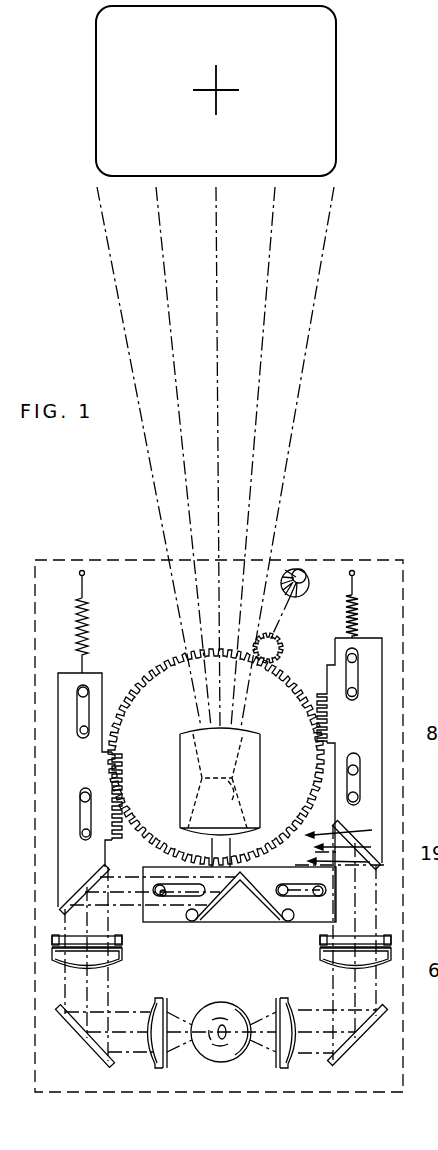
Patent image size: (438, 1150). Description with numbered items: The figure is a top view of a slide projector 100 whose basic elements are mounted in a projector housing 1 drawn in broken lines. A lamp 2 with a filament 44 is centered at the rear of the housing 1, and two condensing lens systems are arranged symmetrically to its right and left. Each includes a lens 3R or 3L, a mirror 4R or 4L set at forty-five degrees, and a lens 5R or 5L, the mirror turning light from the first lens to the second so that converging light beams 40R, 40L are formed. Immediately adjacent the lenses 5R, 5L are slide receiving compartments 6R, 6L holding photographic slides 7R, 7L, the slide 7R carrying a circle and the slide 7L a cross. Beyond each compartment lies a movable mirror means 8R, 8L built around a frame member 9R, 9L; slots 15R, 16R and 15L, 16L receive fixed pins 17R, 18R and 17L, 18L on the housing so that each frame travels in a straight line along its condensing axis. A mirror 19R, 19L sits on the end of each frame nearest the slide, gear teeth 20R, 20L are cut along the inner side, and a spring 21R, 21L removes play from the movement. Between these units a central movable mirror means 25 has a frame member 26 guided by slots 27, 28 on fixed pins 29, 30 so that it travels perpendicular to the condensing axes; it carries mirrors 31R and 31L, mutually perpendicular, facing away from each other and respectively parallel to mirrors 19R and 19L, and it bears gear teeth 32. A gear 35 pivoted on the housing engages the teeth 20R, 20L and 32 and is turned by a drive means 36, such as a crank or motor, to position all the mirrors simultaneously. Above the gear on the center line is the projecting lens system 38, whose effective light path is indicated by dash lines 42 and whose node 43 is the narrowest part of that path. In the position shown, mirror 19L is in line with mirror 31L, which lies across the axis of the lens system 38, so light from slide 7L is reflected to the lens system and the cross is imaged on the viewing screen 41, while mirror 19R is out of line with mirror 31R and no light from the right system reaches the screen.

The projector housing 1 is at (332, 560).
The slide projector 100 is at (123, 555).
The viewing screen 41 is at (107, 58).
The lamp 2 is at (235, 1015).
The filament 44 is at (215, 1036).
The lens 3L is at (150, 1062).
The lens 3R is at (291, 1063).
The mirror 4L is at (85, 1040).
The mirror 4R is at (358, 1040).
The lens 5L is at (112, 966).
The lens 5R is at (330, 966).
The slide receiving compartment 6L is at (52, 941).
The slide receiving compartment 6R is at (392, 940).
The photographic slide 7L is at (70, 937).
The photographic slide 7R is at (375, 940).
The movable mirror means 8L is at (53, 755).
The movable mirror means 8R is at (386, 727).
The frame member 9L is at (66, 673).
The frame member 9R is at (371, 637).
The slot 15L is at (85, 733).
The slot 15R is at (356, 657).
The slot 16L is at (86, 838).
The slot 16R is at (356, 772).
The fixed pin 17L is at (78, 693).
The fixed pin 17R is at (357, 692).
The fixed pin 18L is at (80, 800).
The fixed pin 18R is at (357, 797).
The mirror 19L is at (80, 890).
The mirror 19R is at (360, 845).
The gear teeth 20L is at (124, 818).
The gear teeth 20R is at (322, 690).
The spring 21L is at (91, 634).
The spring 21R is at (345, 607).
The movable mirror means 25 is at (222, 930).
The frame member 26 is at (245, 910).
The slot 27 is at (162, 886).
The slot 28 is at (317, 896).
The fixed pin 29 is at (163, 896).
The fixed pin 30 is at (285, 895).
The mirror 31L is at (189, 921).
The mirror 31R is at (286, 921).
The gear teeth 32 is at (326, 847).
The gear 35 is at (166, 660).
The drive means 36 is at (265, 629).
The projecting lens system 38 is at (247, 723).
The converging light beam 40L is at (232, 909).
The converging light beam 40R is at (356, 895).
The effective light path 42 is at (195, 750).
The node 43 is at (217, 781).